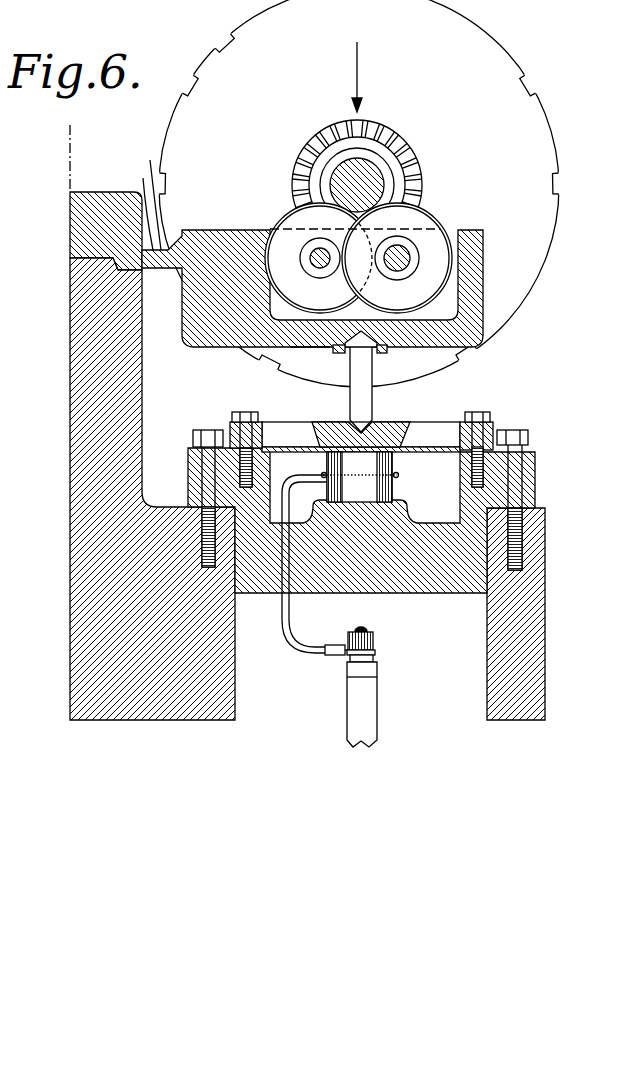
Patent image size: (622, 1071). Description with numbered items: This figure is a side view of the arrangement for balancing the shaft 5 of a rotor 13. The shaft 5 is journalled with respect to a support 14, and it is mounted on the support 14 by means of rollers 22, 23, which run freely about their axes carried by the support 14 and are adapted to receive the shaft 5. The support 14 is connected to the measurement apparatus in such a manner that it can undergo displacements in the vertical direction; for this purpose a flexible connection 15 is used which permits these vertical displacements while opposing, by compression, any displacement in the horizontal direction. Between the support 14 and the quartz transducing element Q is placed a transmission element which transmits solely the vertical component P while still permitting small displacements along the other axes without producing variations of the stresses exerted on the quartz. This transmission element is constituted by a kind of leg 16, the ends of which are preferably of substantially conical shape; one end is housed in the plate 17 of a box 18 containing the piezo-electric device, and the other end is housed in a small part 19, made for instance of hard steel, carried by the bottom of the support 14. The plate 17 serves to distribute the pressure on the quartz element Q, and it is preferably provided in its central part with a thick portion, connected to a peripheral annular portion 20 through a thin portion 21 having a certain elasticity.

The shaft 5 is at (376, 167).
The rotor 13 is at (544, 138).
The support 14 is at (188, 300).
The flexible connection 15 is at (183, 197).
The leg 16 is at (350, 400).
The plate 17 is at (387, 421).
The box 18 is at (495, 487).
The small part 19 is at (307, 347).
The peripheral annular portion 20 is at (490, 422).
The thin portion 21 is at (430, 447).
The roller 22 is at (288, 217).
The roller 23 is at (424, 217).
The vertical component P is at (367, 77).
The quartz transducing element Q is at (393, 487).